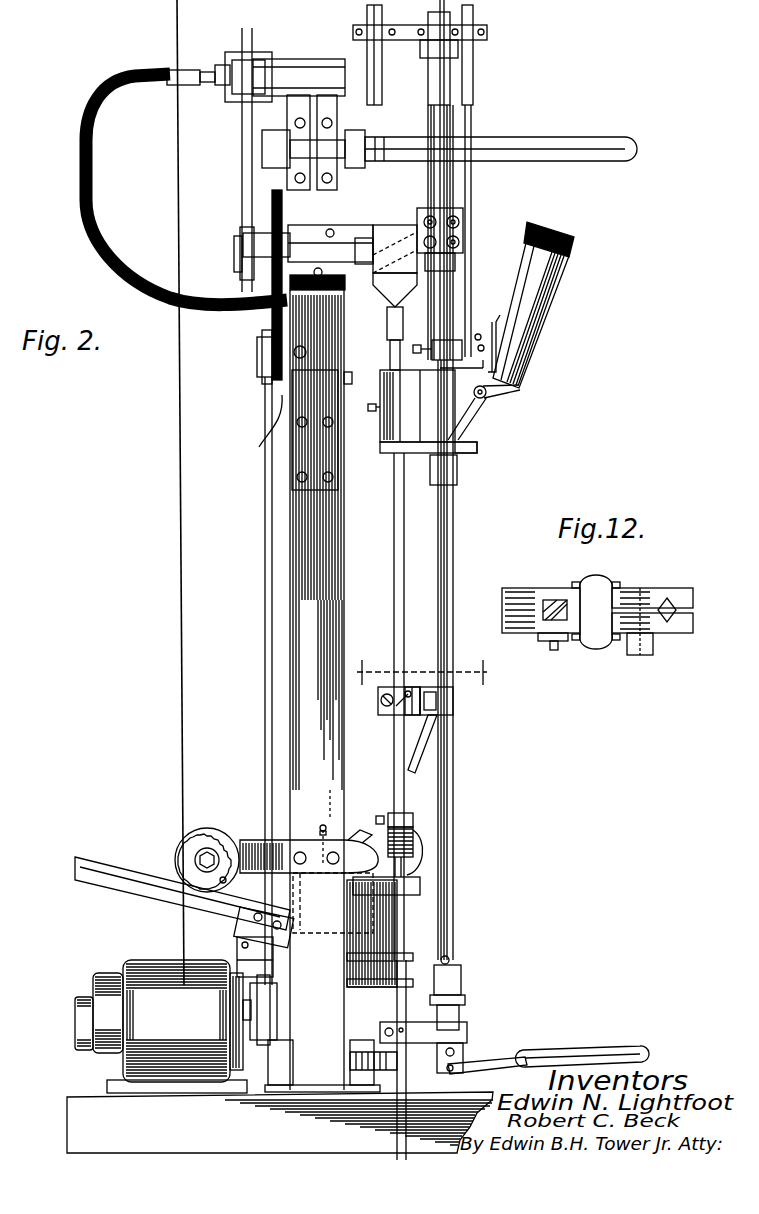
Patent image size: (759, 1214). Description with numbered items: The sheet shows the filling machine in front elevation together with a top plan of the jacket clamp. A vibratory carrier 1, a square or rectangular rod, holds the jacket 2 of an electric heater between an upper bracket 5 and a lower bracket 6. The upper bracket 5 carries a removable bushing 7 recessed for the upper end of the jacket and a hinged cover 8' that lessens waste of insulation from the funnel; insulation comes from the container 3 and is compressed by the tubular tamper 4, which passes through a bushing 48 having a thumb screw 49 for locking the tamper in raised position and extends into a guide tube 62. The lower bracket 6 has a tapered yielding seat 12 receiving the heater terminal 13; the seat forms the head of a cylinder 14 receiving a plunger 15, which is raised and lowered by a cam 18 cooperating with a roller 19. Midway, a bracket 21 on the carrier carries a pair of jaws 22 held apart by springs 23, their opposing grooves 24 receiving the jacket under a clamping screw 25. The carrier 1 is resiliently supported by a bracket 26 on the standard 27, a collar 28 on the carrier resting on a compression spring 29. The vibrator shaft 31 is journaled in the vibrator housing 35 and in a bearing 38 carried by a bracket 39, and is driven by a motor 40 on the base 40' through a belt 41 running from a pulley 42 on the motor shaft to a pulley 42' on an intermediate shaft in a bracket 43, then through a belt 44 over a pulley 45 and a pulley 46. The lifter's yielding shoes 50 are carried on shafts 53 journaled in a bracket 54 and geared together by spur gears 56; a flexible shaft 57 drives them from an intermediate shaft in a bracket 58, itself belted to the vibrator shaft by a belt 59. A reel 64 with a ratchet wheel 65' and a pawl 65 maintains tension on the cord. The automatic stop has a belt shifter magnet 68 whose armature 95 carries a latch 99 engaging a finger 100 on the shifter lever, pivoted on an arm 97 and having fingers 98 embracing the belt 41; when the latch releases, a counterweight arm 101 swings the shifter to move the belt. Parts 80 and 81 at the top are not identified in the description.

In FIG. 2, the vibratory carrier 1 is at (394, 578).
In FIG. 2, the jacket 2 is at (453, 579).
In FIG. 2, the container 3 is at (520, 370).
In FIG. 2, the tubular tamper 4 is at (444, 190).
In FIG. 2, the upper bracket 5 is at (380, 429).
In FIG. 2, the lower bracket 6 is at (420, 1030).
In FIG. 2, the removable bushing 7 is at (457, 483).
In FIG. 2, the cover 8' is at (480, 454).
In FIG. 2, the tapered yielding seat 12 is at (424, 680).
In FIG. 2, the electric heater terminal 13 is at (450, 960).
In FIG. 2, the cylinder 14 is at (461, 983).
In FIG. 2, the plunger 15 is at (459, 1008).
In FIG. 2, the cam 18 is at (520, 1050).
In FIG. 2, the roller 19 is at (462, 1048).
In FIG. 2, the bracket 21 is at (385, 688).
In FIG. 12, the bracket 21 is at (510, 628).
In FIG. 12, the jaws 22 is at (693, 592).
In FIG. 2, the springs 23 is at (414, 688).
In FIG. 12, the springs 23 is at (596, 578).
In FIG. 12, the grooves 24 is at (670, 598).
In FIG. 2, the clamping screw 25 is at (440, 700).
In FIG. 12, the clamping screw 25 is at (653, 652).
In FIG. 2, the bracket 26 is at (378, 930).
In FIG. 2, the standard 27 is at (322, 330).
In FIG. 2, the collar 28 is at (405, 814).
In FIG. 2, the compression spring 29 is at (418, 875).
In FIG. 2, the vibrator shaft 31 is at (342, 240).
In FIG. 2, the vibrator housing 35 is at (385, 226).
In FIG. 2, the shaft 38 is at (298, 232).
In FIG. 2, the bracket 39 is at (364, 236).
In FIG. 2, the motor 40 is at (163, 1000).
In FIG. 2, the base 40' is at (261, 1122).
In FIG. 2, the belt 41 is at (265, 606).
In FIG. 2, the pulley 42 is at (287, 1010).
In FIG. 2, the pulley 42' is at (248, 357).
In FIG. 2, the bracket 43 is at (262, 440).
In FIG. 2, the belt 44 is at (272, 326).
In FIG. 2, the pulley 45 is at (275, 366).
In FIG. 2, the pulley 46 is at (258, 288).
In FIG. 2, the bushing 48 is at (452, 352).
In FIG. 2, the thumb screw 49 is at (418, 352).
In FIG. 2, the yielding jaws 50 is at (448, 264).
In FIG. 2, the rotatable shaft 53 is at (459, 224).
In FIG. 2, the bracket 54 is at (437, 218).
In FIG. 2, the spur gears 56 is at (459, 242).
In FIG. 2, the flexible shaft 57 is at (118, 258).
In FIG. 2, the bracket 58 is at (296, 108).
In FIG. 2, the belt 59 is at (242, 184).
In FIG. 2, the guide tube 62 is at (428, 88).
In FIG. 2, the reel 64 is at (215, 830).
In FIG. 2, the pawl 65 is at (309, 843).
In FIG. 2, the ratchet wheel 65' is at (189, 861).
In FIG. 2, the belt shifter magnet 68 is at (388, 835).
In FIG. 2, the bar 80 is at (382, 62).
In FIG. 2, the bar 81 is at (473, 90).
In FIG. 2, the armature 95 is at (330, 805).
In FIG. 2, the vertical arm 97 is at (237, 940).
In FIG. 2, the fingers 98 is at (248, 908).
In FIG. 2, the latch 99 is at (320, 830).
In FIG. 2, the finger 100 is at (300, 885).
In FIG. 2, the counterweight arm 101 is at (100, 872).